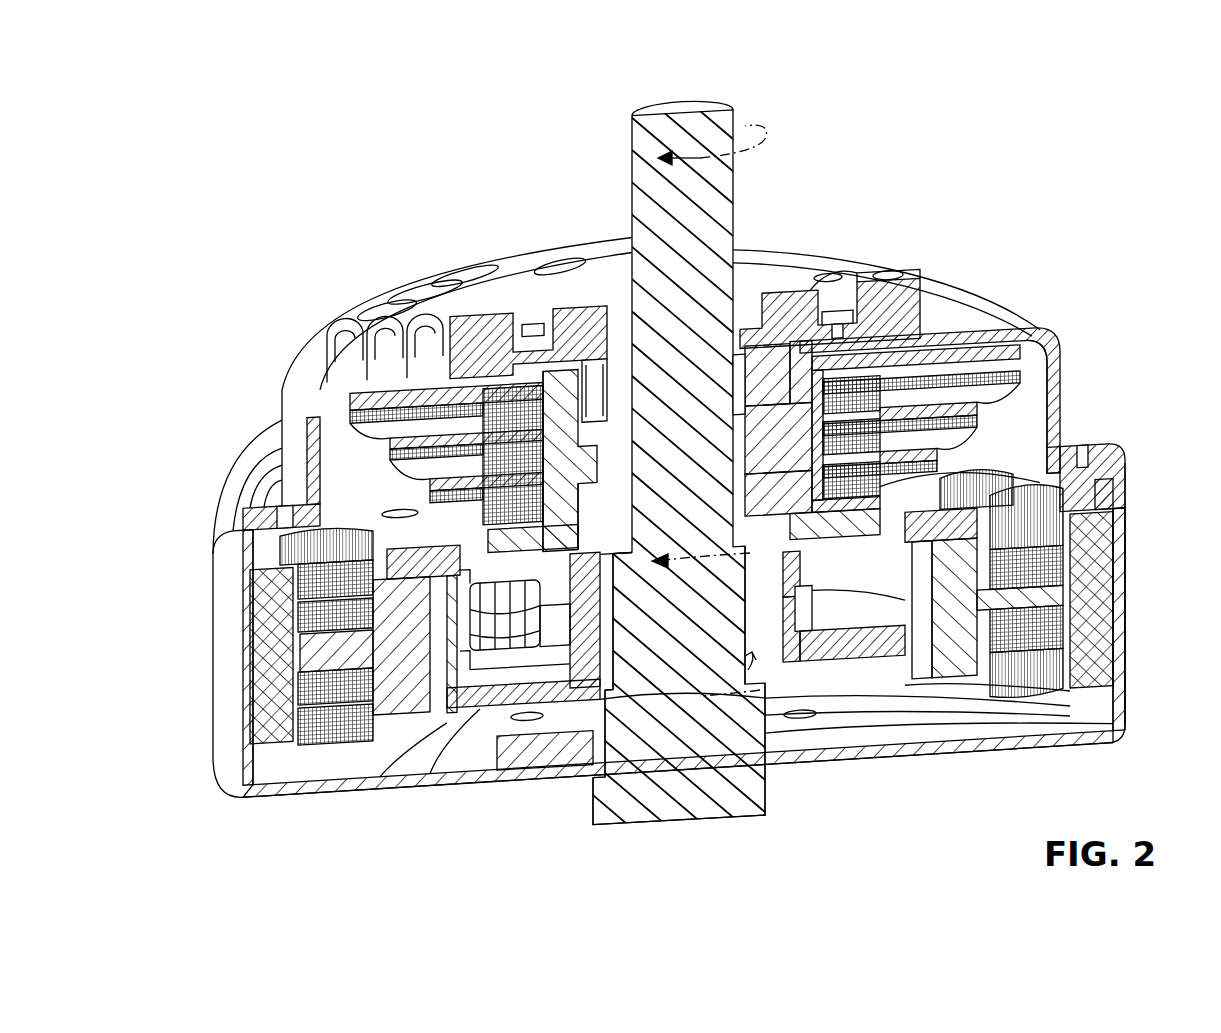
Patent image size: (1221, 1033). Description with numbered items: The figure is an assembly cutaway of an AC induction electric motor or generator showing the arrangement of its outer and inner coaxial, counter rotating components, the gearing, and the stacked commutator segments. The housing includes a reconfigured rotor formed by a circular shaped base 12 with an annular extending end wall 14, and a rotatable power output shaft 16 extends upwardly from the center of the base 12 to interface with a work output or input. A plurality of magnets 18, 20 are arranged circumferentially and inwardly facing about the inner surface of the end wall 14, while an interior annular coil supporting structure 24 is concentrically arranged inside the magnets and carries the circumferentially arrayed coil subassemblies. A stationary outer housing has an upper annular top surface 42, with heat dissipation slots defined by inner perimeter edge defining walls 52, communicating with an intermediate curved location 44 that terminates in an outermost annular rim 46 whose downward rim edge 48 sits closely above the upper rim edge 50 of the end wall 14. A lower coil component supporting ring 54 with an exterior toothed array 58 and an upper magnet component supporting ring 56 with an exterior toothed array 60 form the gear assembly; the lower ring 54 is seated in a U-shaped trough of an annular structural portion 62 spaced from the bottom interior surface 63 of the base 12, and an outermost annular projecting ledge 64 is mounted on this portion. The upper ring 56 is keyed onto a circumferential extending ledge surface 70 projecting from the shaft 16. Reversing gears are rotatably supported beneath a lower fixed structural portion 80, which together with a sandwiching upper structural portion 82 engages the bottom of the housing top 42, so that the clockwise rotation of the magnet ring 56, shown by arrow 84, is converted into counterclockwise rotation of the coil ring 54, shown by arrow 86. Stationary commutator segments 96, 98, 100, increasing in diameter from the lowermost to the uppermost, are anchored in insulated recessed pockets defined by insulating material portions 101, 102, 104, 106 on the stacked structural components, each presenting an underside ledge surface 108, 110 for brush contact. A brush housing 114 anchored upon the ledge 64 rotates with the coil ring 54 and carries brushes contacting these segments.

The circular shaped base 12 is at (785, 770).
The annular extending end wall 14 is at (1128, 650).
The rotatable power output shaft 16 is at (690, 120).
The magnet 18 is at (1128, 460).
The magnet 20 is at (1048, 470).
The annular shaped coil supporting structure 24 is at (955, 690).
The top surface 42 is at (775, 255).
The intermediate outer annular curved location 44 is at (1060, 352).
The outermost annular rim 46 is at (1105, 455).
The downward defined rim edge 48 is at (1120, 490).
The upper rim edge 50 is at (1118, 520).
The inner perimeter edge defining walls 52 is at (965, 300).
The lower coil component supporting ring 54 is at (810, 725).
The upper magnet component supporting ring 56 is at (800, 570).
The exterior toothed array 58 is at (812, 618).
The exterior toothed array 60 is at (800, 550).
The annular structural portion 62 is at (898, 668).
The bottom interior surface 63 is at (805, 745).
The annular projecting ledge 64 is at (925, 530).
The keyed circumferential extending ledge surface 70 is at (622, 560).
The lower fixed structural portion 80 is at (583, 468).
The upper structural portion 82 is at (595, 430).
The clockwise arrow 84 is at (720, 570).
The counterclockwise arrow 86 is at (705, 690).
The commutator segment 96 is at (838, 322).
The commutator segment 98 is at (748, 405).
The commutator segment 100 is at (760, 492).
The insulating material portion 101 is at (1045, 348).
The insulating material portion 102 is at (735, 420).
The insulating material portion 104 is at (925, 470).
The insulating material portion 106 is at (750, 528).
The underside extending ledge surface 108 is at (990, 370).
The underside extending ledge surface 110 is at (918, 505).
The brush housing 114 is at (333, 460).